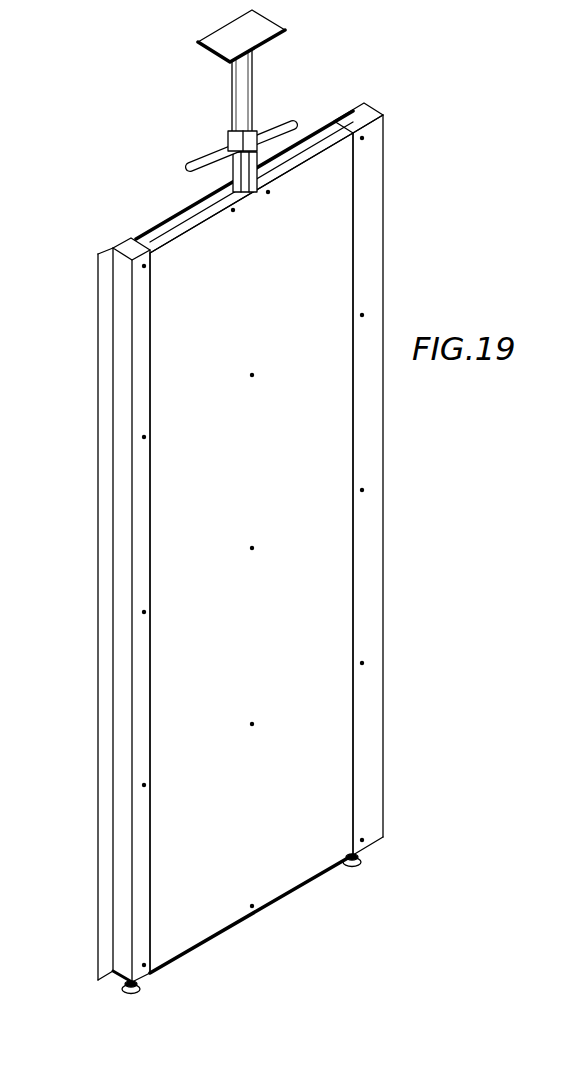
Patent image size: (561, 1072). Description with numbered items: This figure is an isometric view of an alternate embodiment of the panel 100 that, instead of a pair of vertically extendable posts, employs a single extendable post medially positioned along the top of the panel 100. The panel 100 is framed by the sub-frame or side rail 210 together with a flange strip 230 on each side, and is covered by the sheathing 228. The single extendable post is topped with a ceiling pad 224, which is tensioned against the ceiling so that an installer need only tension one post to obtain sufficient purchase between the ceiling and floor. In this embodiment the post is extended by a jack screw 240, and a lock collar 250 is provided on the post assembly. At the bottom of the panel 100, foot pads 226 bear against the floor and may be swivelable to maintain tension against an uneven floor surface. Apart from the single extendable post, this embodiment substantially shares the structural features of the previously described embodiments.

The panel 100 is at (458, 144).
The sub-frame/side rail 210 is at (164, 230).
The ceiling pad 224 is at (221, 38).
The foot pad 226 is at (139, 992).
The sheathing 228 is at (258, 890).
The flange strip 230 is at (98, 297).
The jack screw 240 is at (243, 108).
The lock collar 250 is at (224, 146).